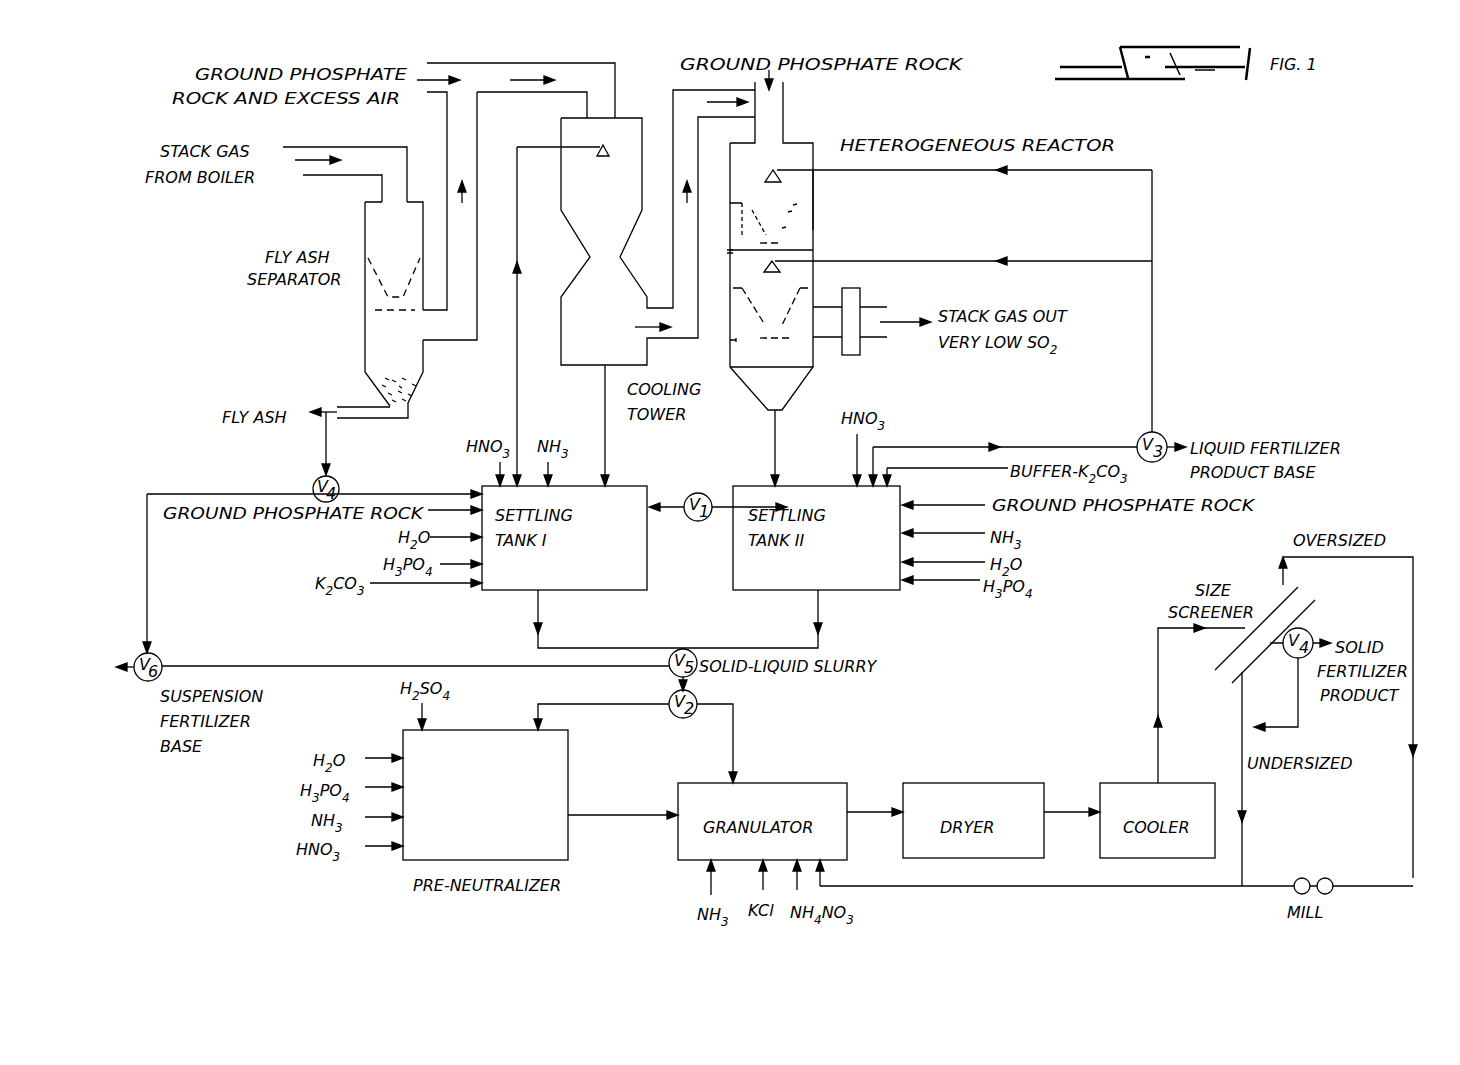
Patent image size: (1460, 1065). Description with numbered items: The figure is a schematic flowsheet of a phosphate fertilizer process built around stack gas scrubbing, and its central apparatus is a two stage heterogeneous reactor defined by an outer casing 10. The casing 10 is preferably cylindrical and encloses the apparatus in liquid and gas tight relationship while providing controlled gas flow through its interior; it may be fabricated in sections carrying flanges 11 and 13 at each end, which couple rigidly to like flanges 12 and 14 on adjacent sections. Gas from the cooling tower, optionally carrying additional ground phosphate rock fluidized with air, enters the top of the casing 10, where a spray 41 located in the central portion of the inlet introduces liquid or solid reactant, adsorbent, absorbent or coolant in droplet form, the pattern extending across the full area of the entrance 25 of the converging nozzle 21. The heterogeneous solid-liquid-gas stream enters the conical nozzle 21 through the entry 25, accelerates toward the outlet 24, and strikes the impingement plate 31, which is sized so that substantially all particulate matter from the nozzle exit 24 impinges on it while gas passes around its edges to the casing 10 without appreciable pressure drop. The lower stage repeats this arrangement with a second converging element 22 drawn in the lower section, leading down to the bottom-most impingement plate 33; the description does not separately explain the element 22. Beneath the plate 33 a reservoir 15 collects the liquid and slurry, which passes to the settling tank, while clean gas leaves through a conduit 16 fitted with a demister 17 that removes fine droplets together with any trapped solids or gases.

The outer casing 10 is at (800, 143).
The flange 11 is at (729, 250).
The flange 12 is at (730, 253).
The flange 13 is at (816, 197).
The flange 14 is at (817, 344).
The reservoir 15 is at (808, 377).
The conduit 16 is at (862, 302).
The demister 17 is at (860, 344).
The converging nozzle 21 is at (788, 212).
The internal baffle 22 is at (752, 310).
The nozzle outlet 24 is at (782, 228).
The nozzle entrance 25 is at (793, 205).
The impingement plate 31 is at (785, 243).
The bottom-most impingement plate 33 is at (768, 340).
The spray 41 is at (779, 172).